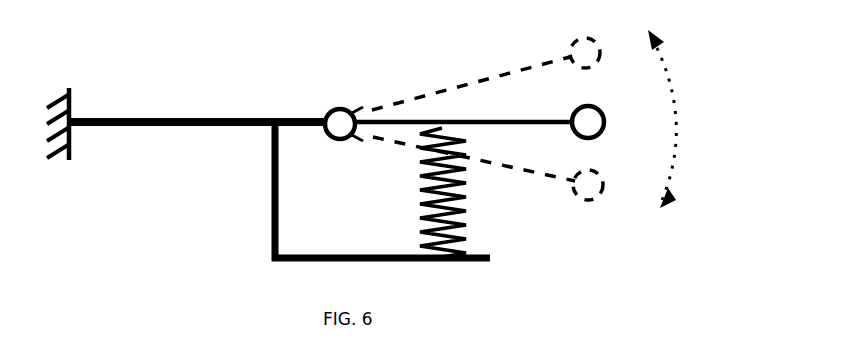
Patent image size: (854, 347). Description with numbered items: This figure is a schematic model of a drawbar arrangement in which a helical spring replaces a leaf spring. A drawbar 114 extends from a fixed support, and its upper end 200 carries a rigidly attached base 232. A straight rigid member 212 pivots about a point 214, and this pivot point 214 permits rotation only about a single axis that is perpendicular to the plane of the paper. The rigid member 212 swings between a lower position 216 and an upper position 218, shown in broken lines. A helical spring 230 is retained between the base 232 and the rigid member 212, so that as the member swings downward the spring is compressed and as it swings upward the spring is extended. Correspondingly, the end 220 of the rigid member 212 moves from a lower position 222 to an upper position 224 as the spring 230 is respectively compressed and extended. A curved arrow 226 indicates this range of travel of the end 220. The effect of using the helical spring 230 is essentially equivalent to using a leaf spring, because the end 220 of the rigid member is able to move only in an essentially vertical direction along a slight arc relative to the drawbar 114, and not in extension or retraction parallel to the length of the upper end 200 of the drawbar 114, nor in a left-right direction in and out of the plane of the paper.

The drawbar 114 is at (102, 127).
The upper end of drawbar 200 is at (168, 117).
The straight rigid member 212 is at (512, 115).
The pivot point 214 is at (343, 104).
The lower position 216 is at (553, 182).
The upper position 218 is at (485, 80).
The end of member 220 is at (594, 107).
The lower position of end 222 is at (597, 173).
The upper position of end 224 is at (592, 37).
The range of motion arrow 226 is at (673, 90).
The helical spring 230 is at (460, 230).
The base 232 is at (489, 257).